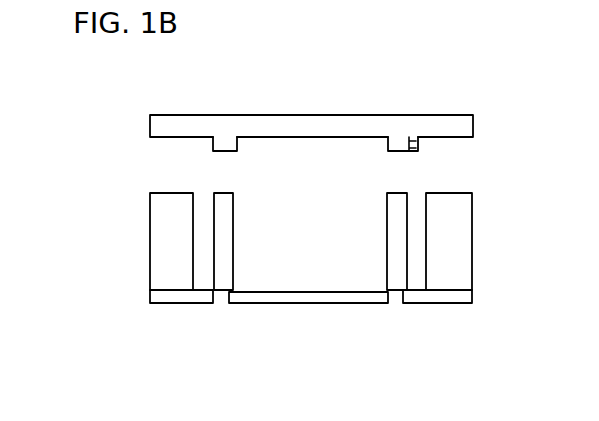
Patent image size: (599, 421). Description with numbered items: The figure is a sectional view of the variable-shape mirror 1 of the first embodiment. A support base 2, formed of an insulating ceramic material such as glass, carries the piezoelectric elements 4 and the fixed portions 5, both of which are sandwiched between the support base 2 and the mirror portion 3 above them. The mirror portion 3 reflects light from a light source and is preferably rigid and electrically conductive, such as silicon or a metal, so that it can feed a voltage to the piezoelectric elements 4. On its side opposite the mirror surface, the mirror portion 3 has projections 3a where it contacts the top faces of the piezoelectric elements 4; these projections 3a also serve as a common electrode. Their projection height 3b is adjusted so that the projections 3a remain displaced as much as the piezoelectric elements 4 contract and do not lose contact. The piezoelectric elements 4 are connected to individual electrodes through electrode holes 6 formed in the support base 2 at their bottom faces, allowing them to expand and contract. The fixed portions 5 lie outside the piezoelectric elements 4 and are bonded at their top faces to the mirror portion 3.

The variable-shape mirror 1 is at (507, 80).
The support base 2 is at (462, 298).
The mirror portion 3 is at (352, 114).
The projections 3a is at (389, 151).
The projection height 3b is at (419, 143).
The piezoelectric elements 4 is at (392, 226).
The fixed portions 5 is at (448, 272).
The electrode holes 6 is at (393, 298).